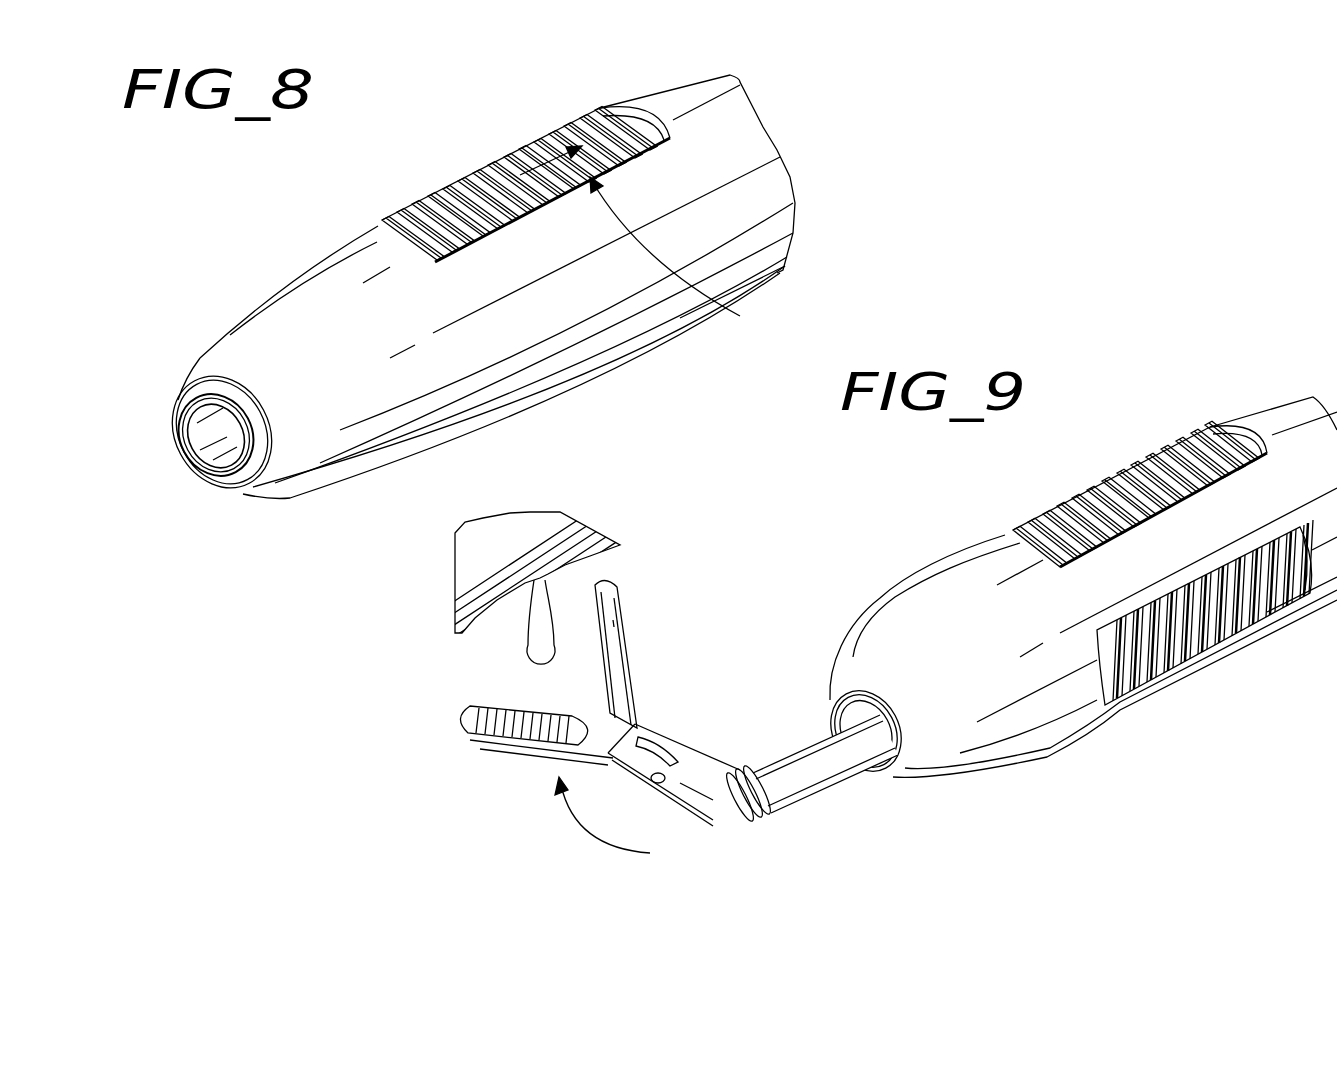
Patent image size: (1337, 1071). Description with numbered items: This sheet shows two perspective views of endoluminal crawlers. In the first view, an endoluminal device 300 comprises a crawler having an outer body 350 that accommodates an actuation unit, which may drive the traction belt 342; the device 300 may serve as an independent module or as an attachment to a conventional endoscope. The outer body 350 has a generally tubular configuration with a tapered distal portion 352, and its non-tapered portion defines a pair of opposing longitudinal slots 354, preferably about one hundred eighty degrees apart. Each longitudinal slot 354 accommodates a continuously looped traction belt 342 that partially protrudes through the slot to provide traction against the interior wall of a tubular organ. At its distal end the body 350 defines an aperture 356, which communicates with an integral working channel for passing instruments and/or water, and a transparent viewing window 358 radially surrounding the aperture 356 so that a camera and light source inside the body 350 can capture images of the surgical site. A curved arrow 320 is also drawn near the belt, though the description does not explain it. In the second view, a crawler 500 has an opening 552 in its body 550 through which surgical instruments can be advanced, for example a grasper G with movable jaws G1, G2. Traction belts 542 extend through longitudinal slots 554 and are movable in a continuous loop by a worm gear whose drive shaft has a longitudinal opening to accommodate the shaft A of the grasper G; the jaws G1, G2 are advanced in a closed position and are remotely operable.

In FIG. 8, the endoluminal device 300 is at (776, 114).
In FIG. 8, the rotation direction 320 is at (740, 316).
In FIG. 8, the traction belt 342 is at (559, 128).
In FIG. 8, the outer body 350 is at (737, 195).
In FIG. 8, the tapered distal portion 352 is at (247, 342).
In FIG. 8, the longitudinal slot 354 is at (502, 153).
In FIG. 8, the aperture 356 is at (217, 438).
In FIG. 8, the viewing window 358 is at (248, 473).
In FIG. 9, the crawler 500 is at (1230, 357).
In FIG. 9, the traction belts 542 is at (1165, 467).
In FIG. 9, the body 550 is at (983, 727).
In FIG. 9, the opening 552 is at (890, 753).
In FIG. 9, the longitudinal slots 554 is at (1115, 575).
In FIG. 8, the grasper G is at (527, 172).
In FIG. 9, the grasper G is at (803, 783).
In FIG. 9, the jaw G1 is at (510, 738).
In FIG. 9, the jaw G2 is at (617, 632).
In FIG. 9, the shaft A is at (812, 738).